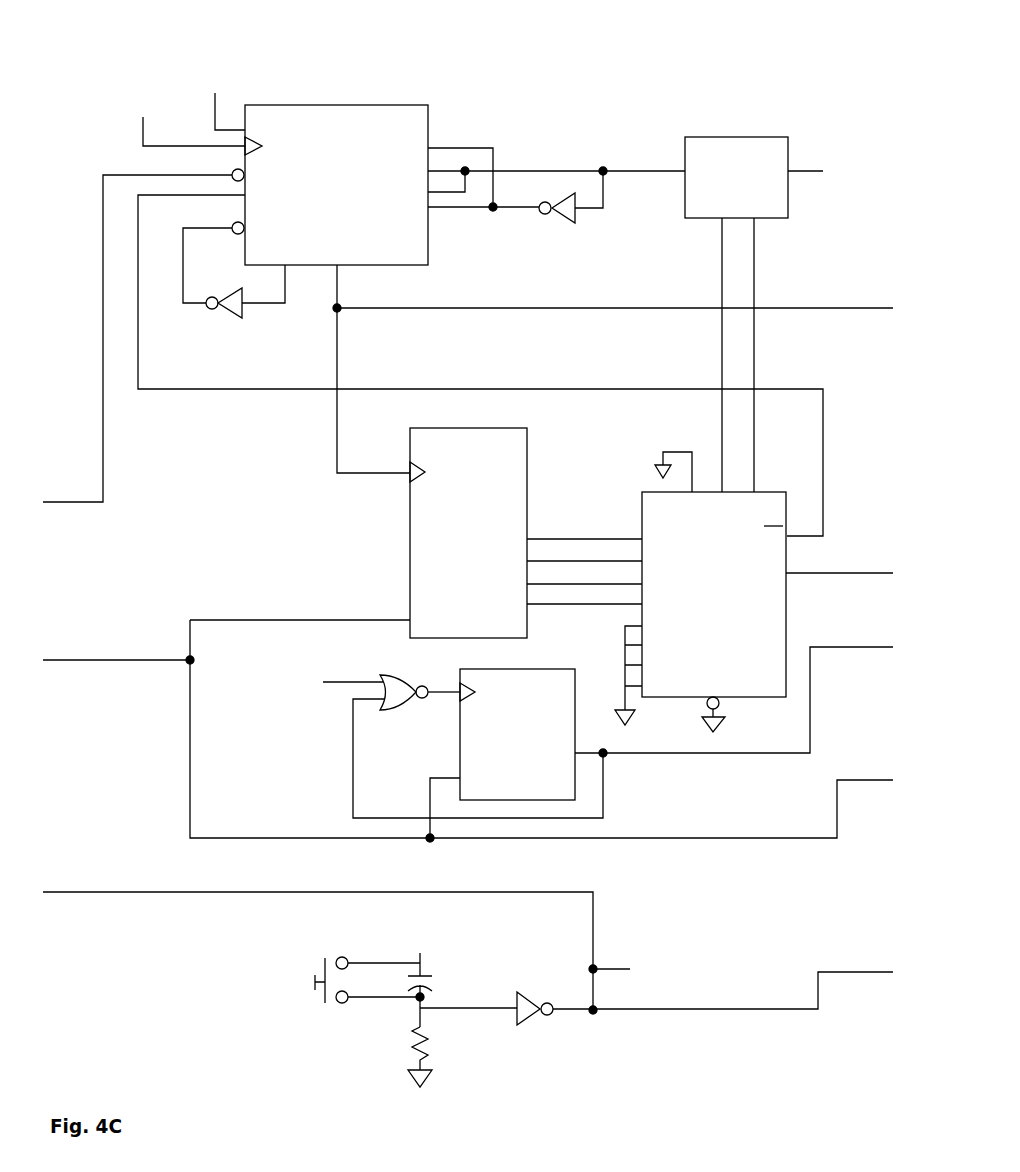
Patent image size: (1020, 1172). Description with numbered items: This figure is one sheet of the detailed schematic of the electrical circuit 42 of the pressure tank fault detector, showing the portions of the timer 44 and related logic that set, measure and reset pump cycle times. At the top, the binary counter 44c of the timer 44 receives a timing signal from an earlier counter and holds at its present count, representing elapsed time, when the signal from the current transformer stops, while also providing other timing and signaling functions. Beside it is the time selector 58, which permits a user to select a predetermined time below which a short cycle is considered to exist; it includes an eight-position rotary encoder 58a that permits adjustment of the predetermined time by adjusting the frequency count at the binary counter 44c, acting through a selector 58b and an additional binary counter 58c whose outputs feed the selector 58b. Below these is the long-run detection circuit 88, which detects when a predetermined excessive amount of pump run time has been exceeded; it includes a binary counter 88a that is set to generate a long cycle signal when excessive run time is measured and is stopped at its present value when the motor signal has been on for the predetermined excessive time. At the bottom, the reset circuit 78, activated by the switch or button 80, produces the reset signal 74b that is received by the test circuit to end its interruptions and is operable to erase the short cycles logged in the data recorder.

The electrical circuit 42 is at (848, 34).
The timer 44 is at (195, 450).
The binary counter 44c is at (403, 93).
The time selector 58 is at (821, 262).
The 8-position rotary encoder 58a is at (671, 207).
The selector 58b is at (637, 515).
The additional binary counter 58c is at (523, 422).
The long-run detection circuit 88 is at (240, 783).
The binary counter 88a is at (534, 662).
The reset signal 74b is at (674, 944).
The reset circuit 78 is at (490, 1045).
The switch or button 80 is at (306, 1013).